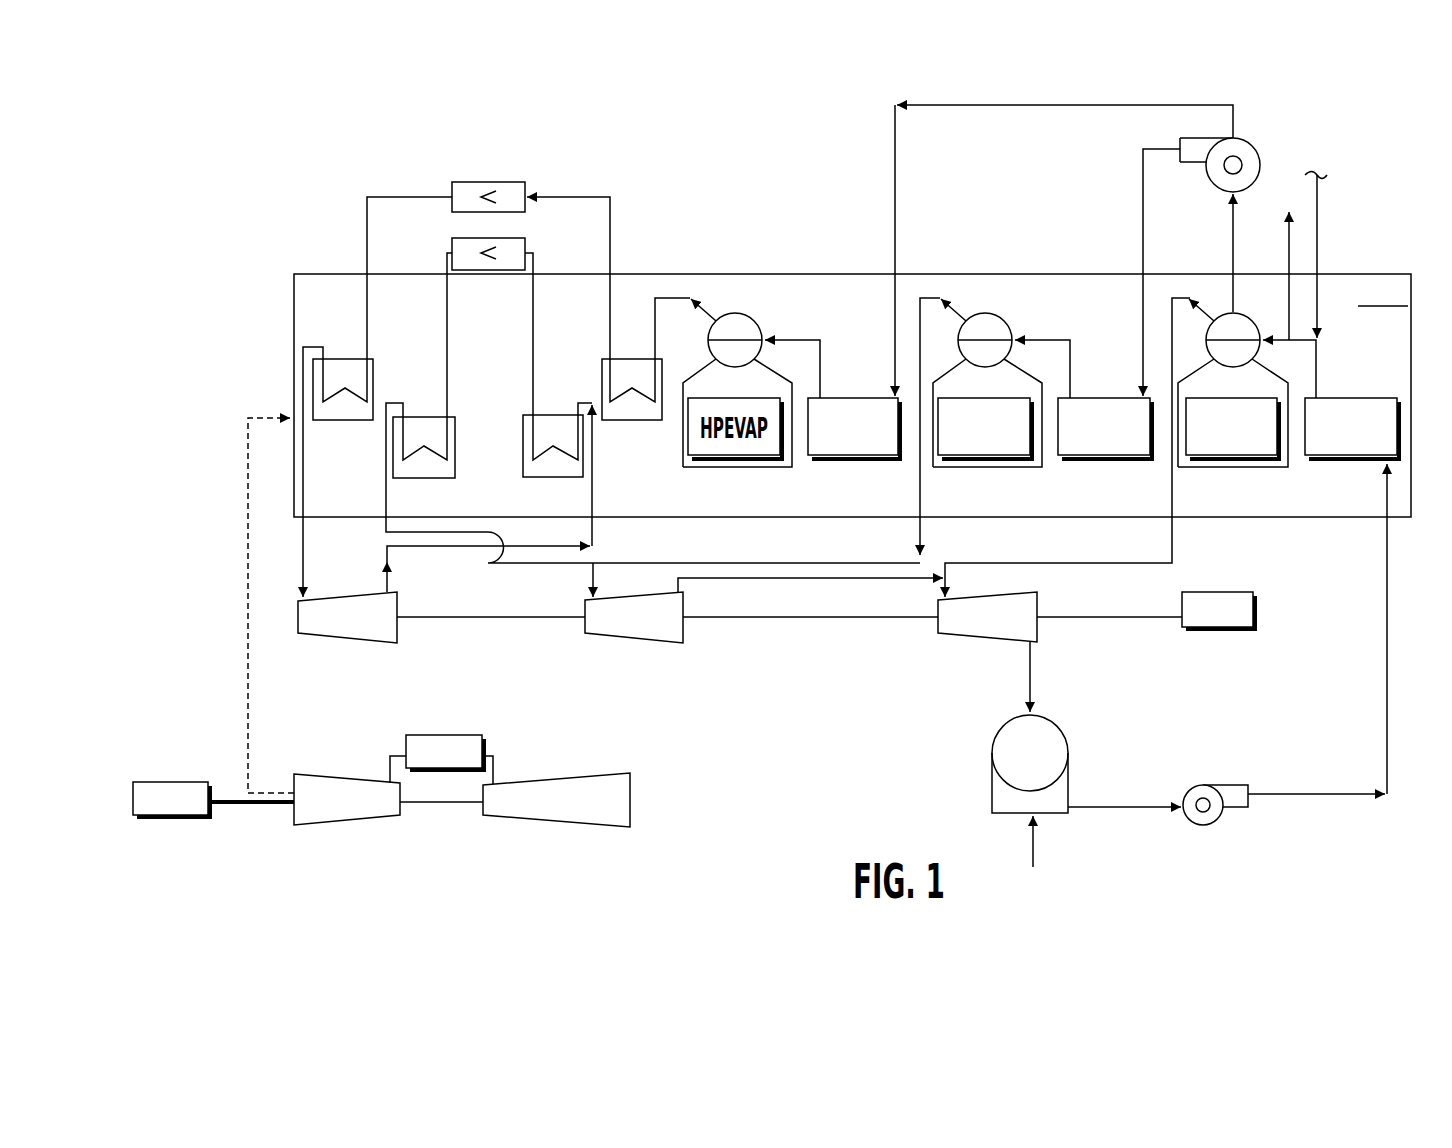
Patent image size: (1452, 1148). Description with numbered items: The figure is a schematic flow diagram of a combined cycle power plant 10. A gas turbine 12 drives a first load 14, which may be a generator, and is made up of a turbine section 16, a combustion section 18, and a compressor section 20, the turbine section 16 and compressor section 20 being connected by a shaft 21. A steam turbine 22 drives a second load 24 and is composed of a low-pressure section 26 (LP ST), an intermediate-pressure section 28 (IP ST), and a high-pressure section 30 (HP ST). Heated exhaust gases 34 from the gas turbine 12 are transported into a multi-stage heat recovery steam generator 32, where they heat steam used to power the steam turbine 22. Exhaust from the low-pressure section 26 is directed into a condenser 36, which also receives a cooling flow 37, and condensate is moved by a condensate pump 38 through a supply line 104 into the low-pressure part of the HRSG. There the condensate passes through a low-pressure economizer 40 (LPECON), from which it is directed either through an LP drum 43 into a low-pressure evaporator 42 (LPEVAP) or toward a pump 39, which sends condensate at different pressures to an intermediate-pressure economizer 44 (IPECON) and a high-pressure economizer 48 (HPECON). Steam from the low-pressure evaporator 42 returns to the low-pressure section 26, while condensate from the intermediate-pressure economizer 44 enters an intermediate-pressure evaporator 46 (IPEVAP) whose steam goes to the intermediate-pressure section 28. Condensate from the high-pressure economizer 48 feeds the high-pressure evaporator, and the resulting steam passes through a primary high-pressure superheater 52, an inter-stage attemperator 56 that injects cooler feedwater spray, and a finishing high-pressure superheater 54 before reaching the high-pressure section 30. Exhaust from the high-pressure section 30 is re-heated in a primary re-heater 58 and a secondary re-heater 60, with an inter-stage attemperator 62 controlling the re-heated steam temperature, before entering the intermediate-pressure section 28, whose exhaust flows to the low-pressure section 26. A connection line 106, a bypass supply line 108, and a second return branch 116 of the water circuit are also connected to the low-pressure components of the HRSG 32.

The combined cycle power plant 10 is at (333, 166).
The gas turbine 12 is at (462, 788).
The first load 14 is at (172, 782).
The turbine section 16 is at (347, 776).
The combustion section 18 is at (433, 735).
The compressor section 20 is at (563, 776).
The shaft 21 is at (458, 805).
The steam turbine 22 is at (723, 649).
The second load 24 is at (1222, 592).
The low-pressure section 26 is at (993, 642).
The intermediate-pressure section 28 is at (648, 644).
The high-pressure section 30 is at (359, 641).
The heat recovery steam generator 32 is at (669, 273).
The heated exhaust gases 34 is at (248, 690).
The condenser 36 is at (992, 783).
The cooling water line 37 is at (1035, 840).
The condensate pump 38 is at (1203, 825).
The pump 39 is at (1261, 165).
The low-pressure economizer 40 is at (1355, 398).
The low-pressure evaporator 42 is at (1268, 370).
The LP drum 43 is at (1227, 312).
The intermediate-pressure economizer 44 is at (1110, 398).
The intermediate-pressure evaporator 46 is at (1018, 368).
The high-pressure economizer 48 is at (858, 398).
The primary high-pressure superheater 52 is at (627, 421).
The finishing high-pressure superheater 54 is at (330, 421).
The inter-stage attemperator 56 is at (525, 212).
The primary re-heater 58 is at (523, 432).
The secondary re-heater 60 is at (455, 445).
The inter-stage attemperator 62 is at (452, 240).
The supply line 104 is at (1388, 722).
The connection line 106 is at (1314, 350).
The bypass supply line 108 is at (1289, 247).
The second return branch 116 is at (1317, 215).